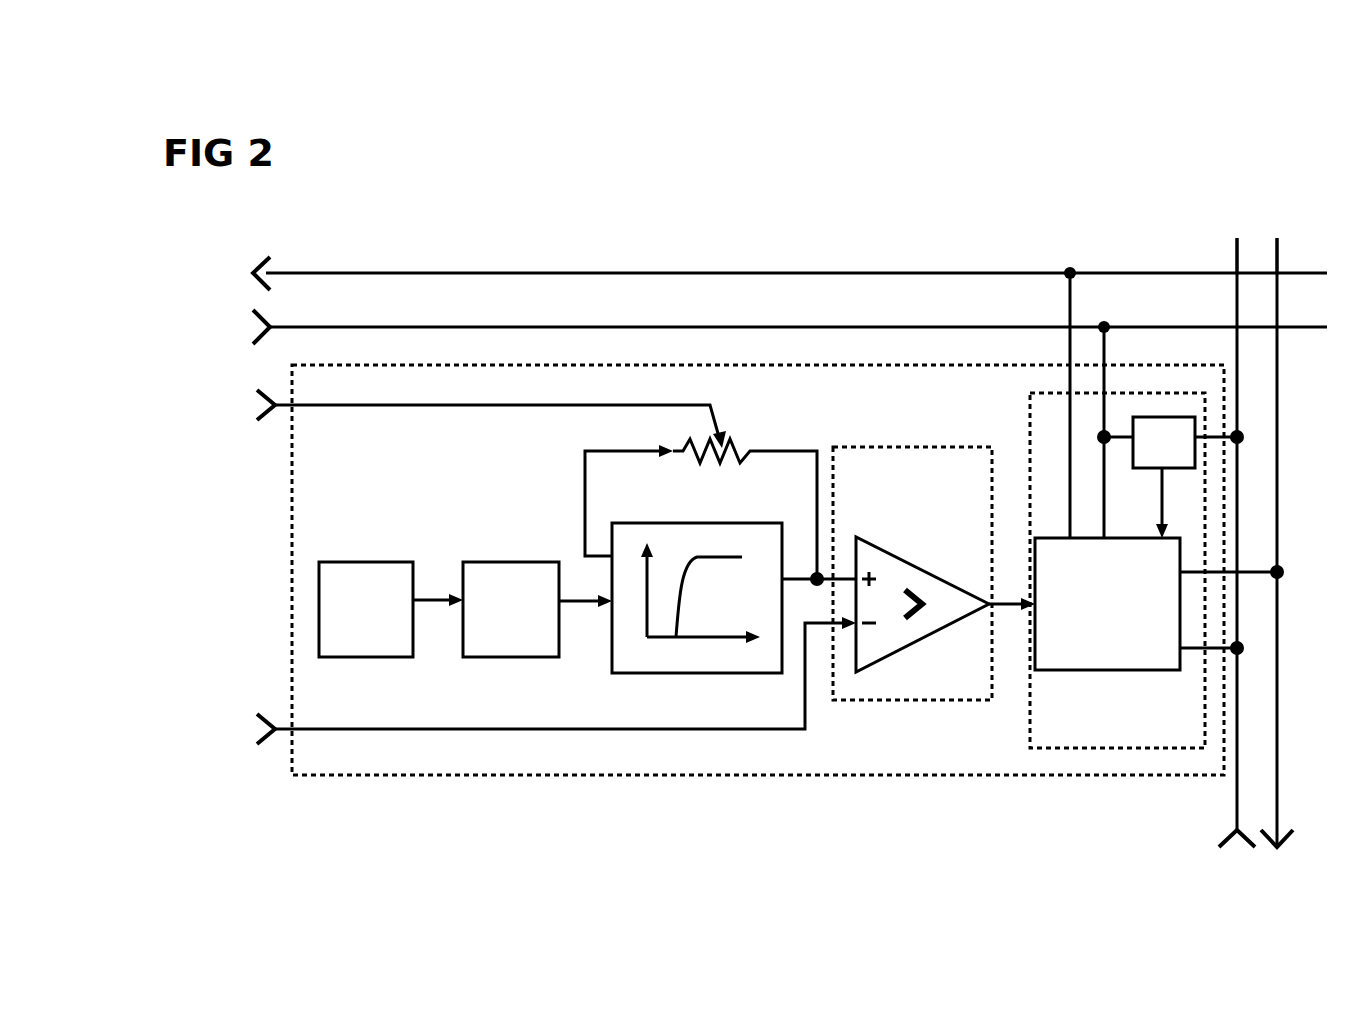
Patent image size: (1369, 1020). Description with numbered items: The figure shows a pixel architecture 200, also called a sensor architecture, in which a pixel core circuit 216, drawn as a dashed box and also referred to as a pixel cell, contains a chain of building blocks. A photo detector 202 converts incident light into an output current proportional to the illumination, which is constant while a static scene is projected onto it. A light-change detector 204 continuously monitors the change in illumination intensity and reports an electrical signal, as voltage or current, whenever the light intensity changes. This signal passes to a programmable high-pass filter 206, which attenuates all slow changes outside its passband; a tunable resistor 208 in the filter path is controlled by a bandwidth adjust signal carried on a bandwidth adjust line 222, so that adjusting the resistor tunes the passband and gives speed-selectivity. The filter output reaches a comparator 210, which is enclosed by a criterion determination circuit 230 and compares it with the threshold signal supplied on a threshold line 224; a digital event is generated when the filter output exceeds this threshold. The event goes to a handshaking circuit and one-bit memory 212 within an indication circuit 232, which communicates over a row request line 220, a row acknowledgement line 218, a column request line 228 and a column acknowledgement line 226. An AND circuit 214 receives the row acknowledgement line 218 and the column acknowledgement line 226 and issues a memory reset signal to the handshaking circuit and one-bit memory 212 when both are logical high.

The pixel architecture 200 is at (1288, 212).
The photo detector 202 is at (345, 577).
The light-change detector 204 is at (480, 577).
The high-pass filter 206 is at (628, 618).
The tunable resistor 208 is at (743, 448).
The comparator 210 is at (895, 573).
The handshaking circuit and 1-bit memory 212 is at (1057, 650).
The AND circuit 214 is at (1165, 453).
The pixel core circuit 216 is at (938, 775).
The row acknowledgement line 218 is at (412, 323).
The row request line 220 is at (290, 277).
The bandwidth adjust line 222 is at (398, 405).
The threshold line 224 is at (425, 732).
The column acknowledgement line 226 is at (1238, 762).
The column request line 228 is at (1278, 830).
The criterion determination circuit 230 is at (883, 445).
The indication circuit 232 is at (1106, 748).